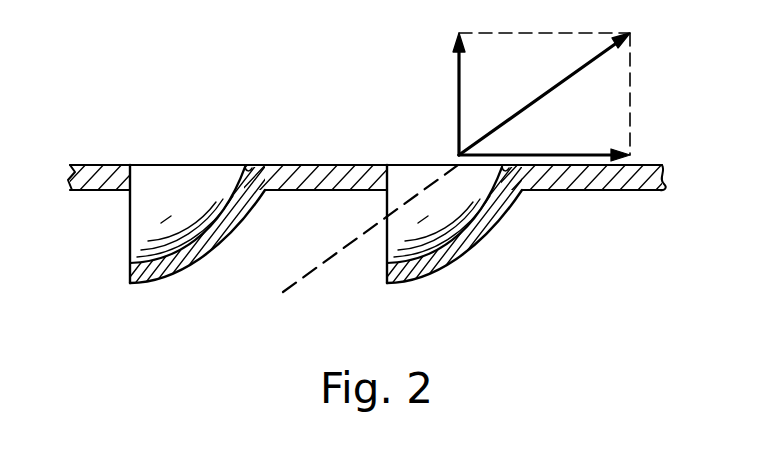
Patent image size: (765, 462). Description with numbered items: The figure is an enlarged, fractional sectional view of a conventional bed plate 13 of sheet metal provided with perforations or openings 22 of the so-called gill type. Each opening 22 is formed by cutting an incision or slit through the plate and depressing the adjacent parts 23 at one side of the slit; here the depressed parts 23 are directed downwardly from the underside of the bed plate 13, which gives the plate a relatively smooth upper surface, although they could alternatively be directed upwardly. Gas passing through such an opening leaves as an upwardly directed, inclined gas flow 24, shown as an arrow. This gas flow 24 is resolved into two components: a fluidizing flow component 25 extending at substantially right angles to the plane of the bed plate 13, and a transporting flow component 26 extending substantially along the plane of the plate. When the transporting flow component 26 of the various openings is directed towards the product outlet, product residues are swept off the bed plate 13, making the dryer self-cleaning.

The bed plate 13 is at (298, 168).
The opening 22 is at (128, 233).
The depressed part 23 is at (180, 262).
The gas flow 24 is at (549, 89).
The fluidizing flow component 25 is at (458, 97).
The transporting flow component 26 is at (585, 153).